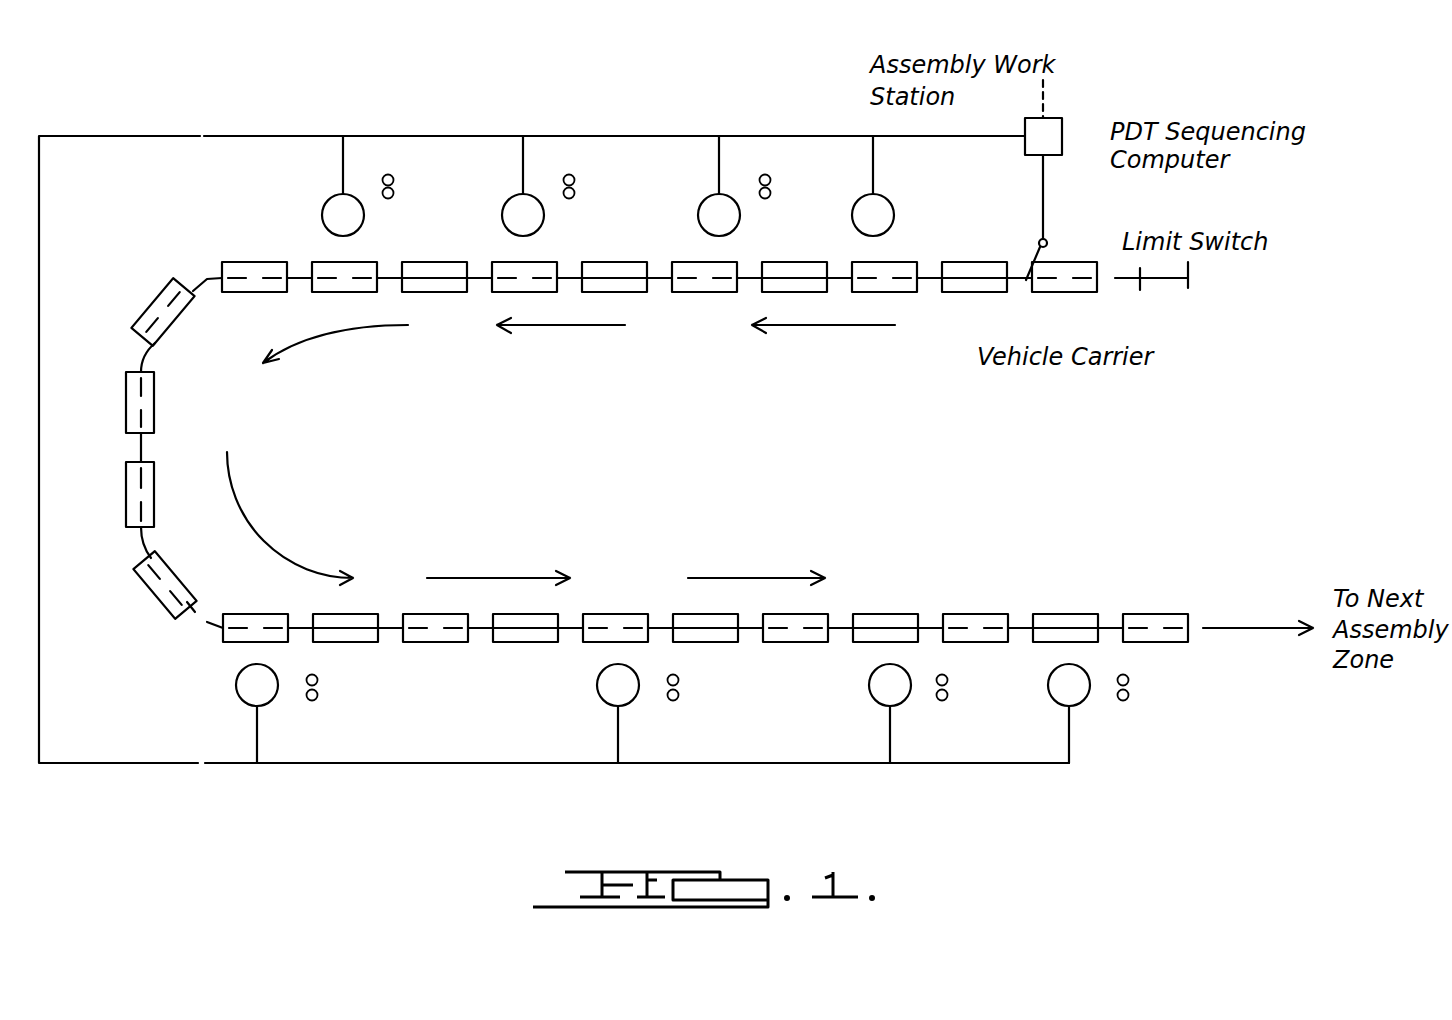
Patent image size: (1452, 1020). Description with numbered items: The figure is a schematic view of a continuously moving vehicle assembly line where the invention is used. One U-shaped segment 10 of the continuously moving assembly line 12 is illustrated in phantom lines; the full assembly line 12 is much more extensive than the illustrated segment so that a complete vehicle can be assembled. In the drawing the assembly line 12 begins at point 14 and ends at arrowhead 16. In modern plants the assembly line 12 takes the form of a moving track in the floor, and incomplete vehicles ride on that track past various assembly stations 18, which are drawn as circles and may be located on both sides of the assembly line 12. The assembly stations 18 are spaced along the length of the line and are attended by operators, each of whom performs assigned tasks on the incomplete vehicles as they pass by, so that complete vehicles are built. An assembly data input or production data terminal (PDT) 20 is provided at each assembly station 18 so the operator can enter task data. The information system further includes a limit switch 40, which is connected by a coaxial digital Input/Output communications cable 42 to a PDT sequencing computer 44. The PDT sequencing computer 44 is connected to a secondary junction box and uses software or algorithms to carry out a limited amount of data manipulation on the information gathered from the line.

The U-shaped segment 10 is at (1140, 292).
The continuously moving assembly line 12 is at (145, 271).
The point 14 is at (1190, 283).
The arrowhead 16 is at (1311, 606).
The assembly station 18 is at (394, 177).
The production data terminal (PDT) 20 is at (394, 194).
The limit switch 40 is at (1036, 250).
The coaxial digital Input/Output communications cable 42 is at (1043, 205).
The PDT sequencing computer 44 is at (1062, 125).